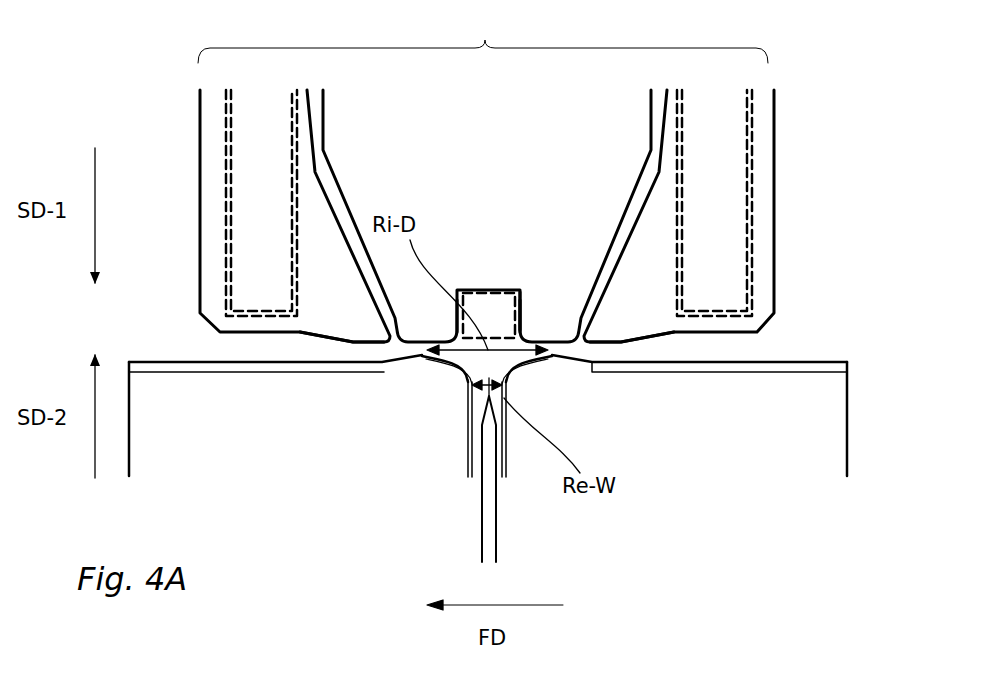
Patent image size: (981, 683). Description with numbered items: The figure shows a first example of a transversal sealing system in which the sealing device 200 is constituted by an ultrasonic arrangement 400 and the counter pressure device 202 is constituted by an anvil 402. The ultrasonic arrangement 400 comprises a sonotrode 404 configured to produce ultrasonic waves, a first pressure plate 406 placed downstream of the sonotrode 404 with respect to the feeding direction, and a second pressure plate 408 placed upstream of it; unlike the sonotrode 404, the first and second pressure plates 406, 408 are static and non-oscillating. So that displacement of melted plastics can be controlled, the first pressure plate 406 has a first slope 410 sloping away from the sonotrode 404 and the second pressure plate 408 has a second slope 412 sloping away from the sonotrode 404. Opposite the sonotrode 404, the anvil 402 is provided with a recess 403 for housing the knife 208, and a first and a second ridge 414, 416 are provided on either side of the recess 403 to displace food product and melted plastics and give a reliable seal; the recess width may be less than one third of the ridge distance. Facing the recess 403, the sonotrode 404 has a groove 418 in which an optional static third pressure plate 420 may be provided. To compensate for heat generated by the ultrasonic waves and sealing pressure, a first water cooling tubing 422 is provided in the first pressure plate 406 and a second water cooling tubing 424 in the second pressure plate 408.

The sealing device 200 is at (140, 85).
The counter pressure device 202 is at (858, 392).
The knife 208 is at (490, 503).
The ultrasonic arrangement 400 is at (483, 38).
The anvil 402 is at (488, 417).
The recess 403 is at (468, 410).
The sonotrode 404 is at (488, 275).
The first pressure plate 406 is at (328, 216).
The second pressure plate 408 is at (647, 216).
The first slope 410 is at (324, 350).
The second slope 412 is at (658, 346).
The first ridge 414 is at (416, 370).
The second ridge 416 is at (557, 373).
The groove 418 is at (478, 300).
The third pressure plate 420 is at (498, 312).
The first water cooling tubing 422 is at (226, 222).
The second water cooling tubing 424 is at (750, 200).